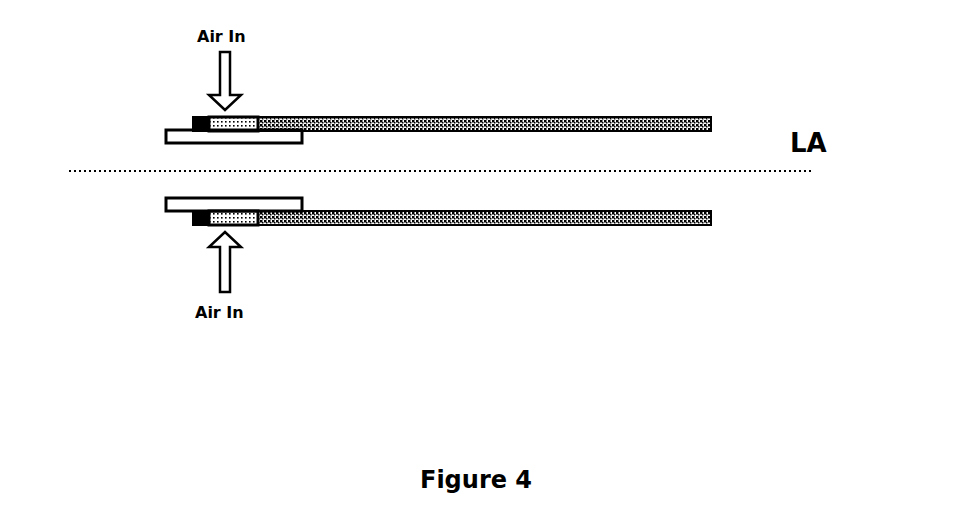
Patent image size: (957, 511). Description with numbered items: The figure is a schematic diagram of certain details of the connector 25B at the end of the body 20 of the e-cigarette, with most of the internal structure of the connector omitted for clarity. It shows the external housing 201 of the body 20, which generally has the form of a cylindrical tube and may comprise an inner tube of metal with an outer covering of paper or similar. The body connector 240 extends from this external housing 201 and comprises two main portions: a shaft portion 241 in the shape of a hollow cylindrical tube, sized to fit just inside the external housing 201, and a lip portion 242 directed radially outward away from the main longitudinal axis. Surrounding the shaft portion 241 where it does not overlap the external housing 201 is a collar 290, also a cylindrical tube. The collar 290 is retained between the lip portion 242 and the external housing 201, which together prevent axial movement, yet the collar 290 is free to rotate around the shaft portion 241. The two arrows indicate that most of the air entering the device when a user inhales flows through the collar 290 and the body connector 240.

The body 20 is at (539, 249).
The external housing 201 is at (677, 232).
The connector 25B is at (200, 239).
The body connector 240 is at (188, 137).
The lip portion 242 is at (190, 227).
The collar 290 is at (257, 111).
The shaft portion 241 is at (286, 209).